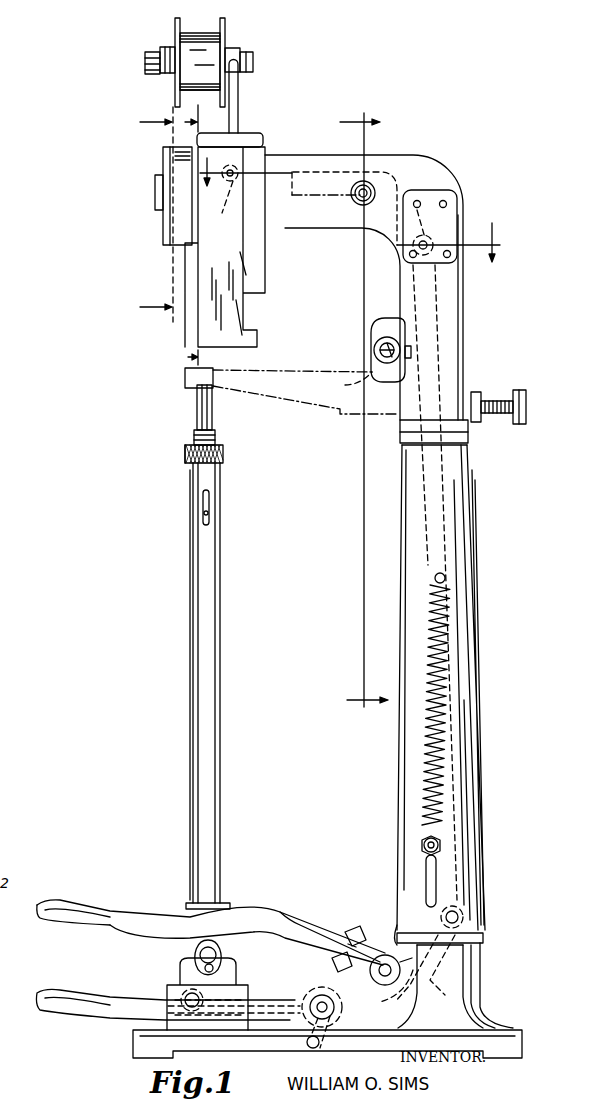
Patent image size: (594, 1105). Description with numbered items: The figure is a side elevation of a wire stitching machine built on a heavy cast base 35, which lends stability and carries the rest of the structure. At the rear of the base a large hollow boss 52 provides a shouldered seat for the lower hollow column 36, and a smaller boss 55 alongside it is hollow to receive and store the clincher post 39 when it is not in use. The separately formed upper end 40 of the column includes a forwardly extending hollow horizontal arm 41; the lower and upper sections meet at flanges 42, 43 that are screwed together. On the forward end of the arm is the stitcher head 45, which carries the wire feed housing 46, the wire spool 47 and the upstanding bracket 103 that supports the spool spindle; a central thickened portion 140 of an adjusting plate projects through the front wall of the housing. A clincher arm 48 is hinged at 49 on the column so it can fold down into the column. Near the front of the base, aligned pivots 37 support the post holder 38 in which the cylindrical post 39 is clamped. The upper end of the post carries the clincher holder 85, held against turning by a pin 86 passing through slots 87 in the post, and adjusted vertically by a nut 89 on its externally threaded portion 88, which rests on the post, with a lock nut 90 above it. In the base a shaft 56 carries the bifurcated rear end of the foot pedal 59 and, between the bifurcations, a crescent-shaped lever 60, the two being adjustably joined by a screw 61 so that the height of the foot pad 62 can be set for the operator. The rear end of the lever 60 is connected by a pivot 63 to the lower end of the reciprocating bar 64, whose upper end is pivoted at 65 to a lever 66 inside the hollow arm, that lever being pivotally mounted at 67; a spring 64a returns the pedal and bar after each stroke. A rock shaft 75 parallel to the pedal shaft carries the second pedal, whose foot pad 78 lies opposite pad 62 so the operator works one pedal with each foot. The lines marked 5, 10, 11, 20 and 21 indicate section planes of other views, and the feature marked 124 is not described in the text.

The section line 5 is at (203, 235).
The section line 10 is at (362, 410).
The section line 11 is at (350, 218).
The section line 20 is at (145, 214).
The section line 21 is at (146, 307).
The base 35 is at (133, 1048).
The hollow column 36 is at (480, 757).
The pivots 37 is at (224, 957).
The post holder 38 is at (192, 945).
The clincher post 39 is at (222, 765).
The upper end of the column 40 is at (456, 330).
The horizontal arm 41 is at (325, 227).
The flange 42 is at (470, 450).
The flange 43 is at (465, 430).
The stitcher head 45 is at (248, 268).
The wire feed housing 46 is at (180, 165).
The wire spool 47 is at (190, 45).
The clincher arm 48 is at (315, 405).
The hinge 49 is at (375, 355).
The hollow boss 52 is at (487, 978).
The boss 55 is at (468, 1000).
The shaft 56 is at (391, 964).
The foot pedal 59 is at (290, 915).
The lever 60 is at (478, 998).
The screw 61 is at (353, 930).
The foot pad 62 is at (68, 900).
The pivot 63 is at (463, 916).
The reciprocating link or bar 64 is at (445, 540).
The spring 64a is at (425, 765).
The pivot 65 is at (428, 238).
The lever 66 is at (318, 172).
The pivot mounting 67 is at (368, 185).
The rock shaft 75 is at (315, 995).
The foot pad 78 is at (67, 993).
The clincher holder 85 is at (212, 415).
The pin 86 is at (210, 513).
The slots 87 is at (210, 498).
The externally threaded portion 88 is at (216, 436).
The nut 89 is at (222, 457).
The lock nut 90 is at (183, 452).
The upstanding bracket 103 is at (239, 105).
The pin 124 is at (229, 195).
The central thickened portion 140 is at (157, 188).